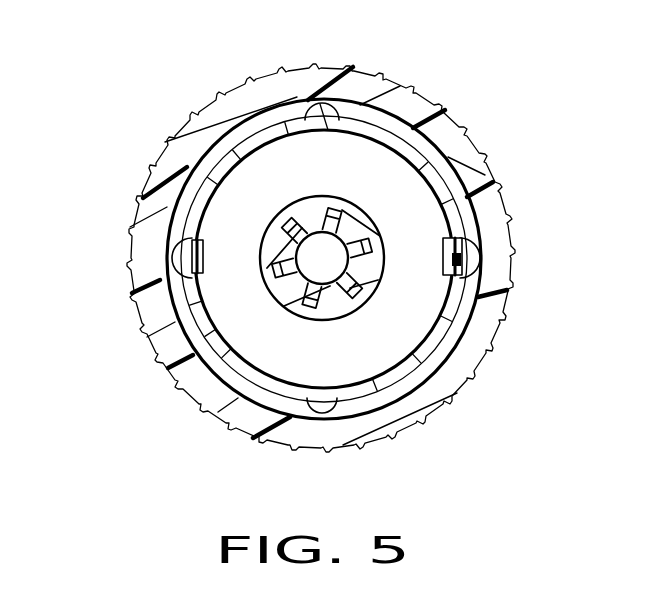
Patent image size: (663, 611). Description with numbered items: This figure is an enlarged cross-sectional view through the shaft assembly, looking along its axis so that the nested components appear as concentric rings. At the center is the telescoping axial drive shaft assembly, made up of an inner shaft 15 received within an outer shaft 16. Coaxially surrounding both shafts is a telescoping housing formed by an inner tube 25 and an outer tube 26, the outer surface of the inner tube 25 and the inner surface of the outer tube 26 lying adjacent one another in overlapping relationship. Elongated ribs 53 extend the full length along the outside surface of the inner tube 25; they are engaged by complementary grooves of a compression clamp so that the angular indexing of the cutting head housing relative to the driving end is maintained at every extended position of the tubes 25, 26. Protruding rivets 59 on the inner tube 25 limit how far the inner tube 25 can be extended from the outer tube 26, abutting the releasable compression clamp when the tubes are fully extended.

The inner shaft 15 is at (278, 225).
The outer shaft 16 is at (374, 281).
The inner tube 25 is at (422, 165).
The outer tube 26 is at (148, 318).
The elongated ribs 53 is at (316, 100).
The protruding rivets 59 is at (168, 258).